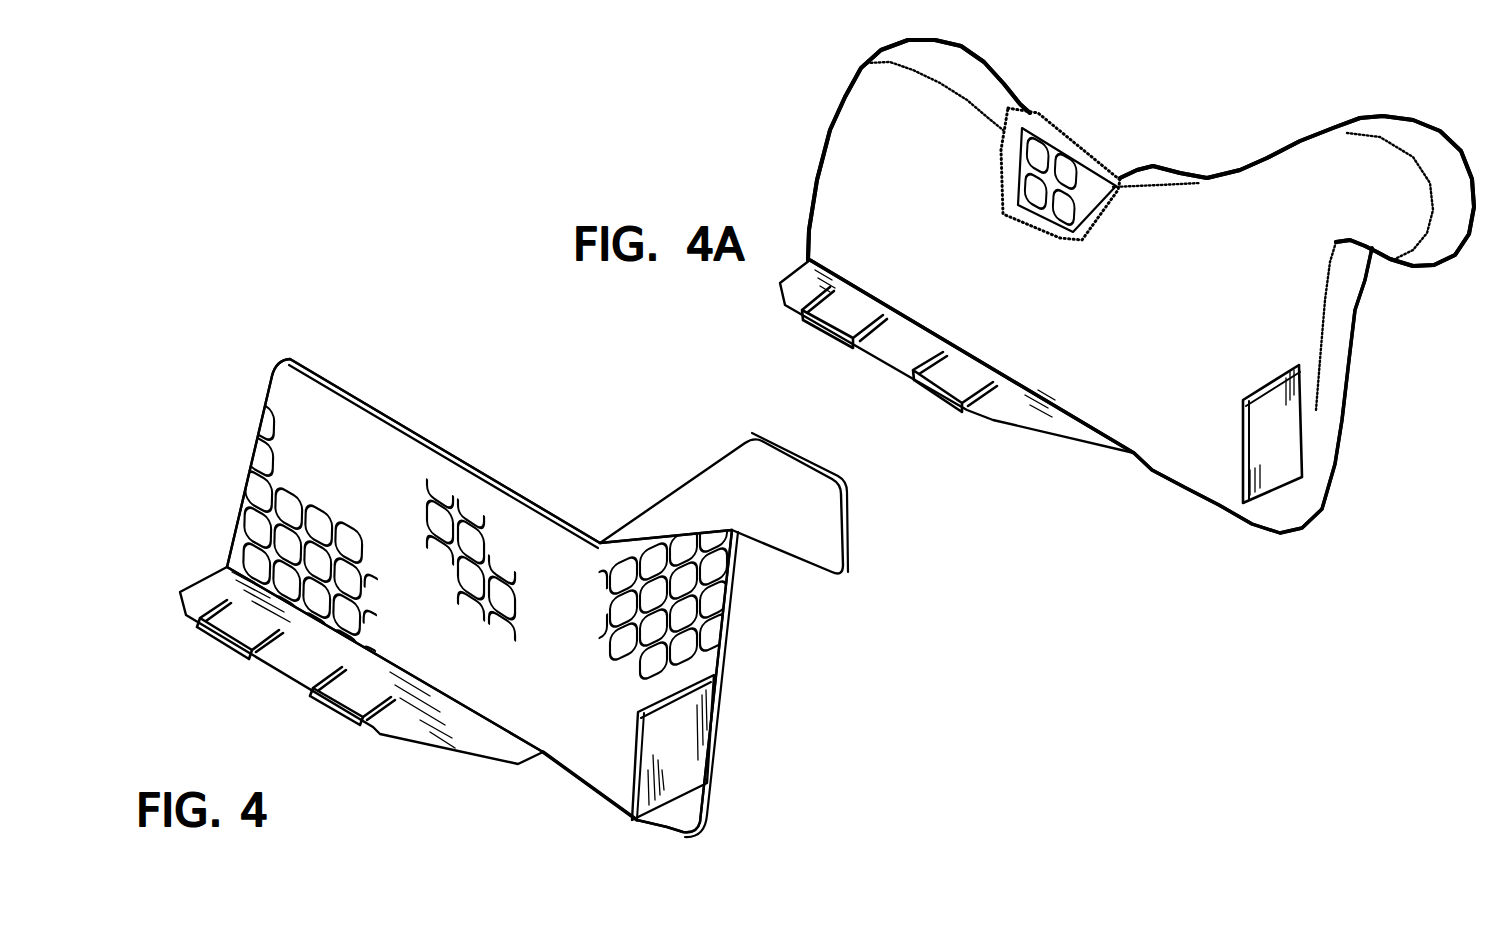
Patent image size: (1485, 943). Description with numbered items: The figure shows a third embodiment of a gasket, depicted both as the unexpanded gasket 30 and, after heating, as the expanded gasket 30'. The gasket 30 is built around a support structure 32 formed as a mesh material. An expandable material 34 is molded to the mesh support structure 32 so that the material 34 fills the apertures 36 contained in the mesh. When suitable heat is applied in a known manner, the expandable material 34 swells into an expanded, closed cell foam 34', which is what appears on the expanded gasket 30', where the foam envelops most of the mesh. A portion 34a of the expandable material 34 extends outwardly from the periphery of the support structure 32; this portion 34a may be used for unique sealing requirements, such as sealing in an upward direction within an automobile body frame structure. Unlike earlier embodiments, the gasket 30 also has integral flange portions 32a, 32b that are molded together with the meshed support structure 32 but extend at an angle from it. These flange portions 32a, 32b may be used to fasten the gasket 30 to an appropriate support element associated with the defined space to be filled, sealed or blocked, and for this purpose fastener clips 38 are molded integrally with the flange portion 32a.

In FIG. 4, the unexpanded gasket 30 is at (479, 584).
In FIG. 4A, the expanded gasket 30' is at (1098, 286).
In FIG. 4, the support structure 32 is at (693, 612).
In FIG. 4A, the support structure 32 is at (1094, 174).
In FIG. 4, the flange portion 32a is at (411, 726).
In FIG. 4A, the flange portion 32a is at (1070, 418).
In FIG. 4, the flange portion 32b is at (638, 756).
In FIG. 4A, the flange portion 32b is at (1257, 447).
In FIG. 4, the expandable material 34 is at (482, 598).
In FIG. 4A, the expanded closed cell foam 34' is at (1141, 286).
In FIG. 4, the portion of expandable material 34a is at (793, 451).
In FIG. 4, the apertures 36 is at (636, 630).
In FIG. 4, the fastener clips 38 is at (206, 633).
In FIG. 4A, the fastener clips 38 is at (818, 325).